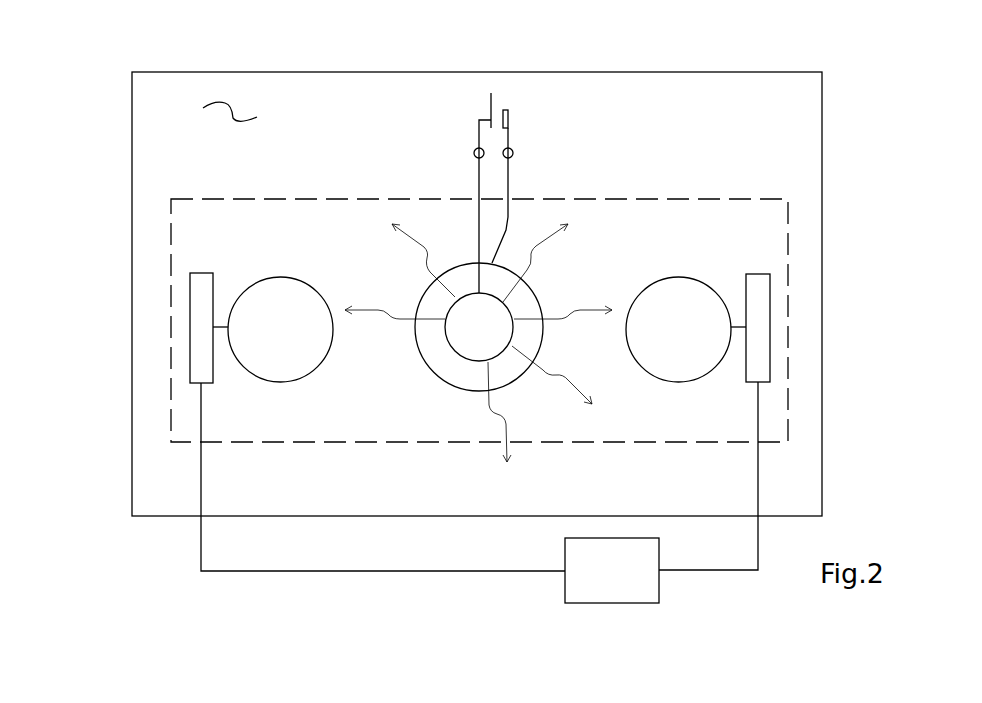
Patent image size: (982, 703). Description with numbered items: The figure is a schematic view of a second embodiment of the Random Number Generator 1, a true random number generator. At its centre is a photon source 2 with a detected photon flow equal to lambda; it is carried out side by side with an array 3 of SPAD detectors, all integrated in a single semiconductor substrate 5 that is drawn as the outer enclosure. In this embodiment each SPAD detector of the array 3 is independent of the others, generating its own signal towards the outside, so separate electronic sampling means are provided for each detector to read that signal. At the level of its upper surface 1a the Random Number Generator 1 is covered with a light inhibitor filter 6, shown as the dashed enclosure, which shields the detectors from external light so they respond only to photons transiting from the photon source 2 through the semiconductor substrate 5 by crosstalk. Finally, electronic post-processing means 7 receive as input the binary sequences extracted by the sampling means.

The Random Number Generator 1 is at (107, 57).
The upper surface 1a is at (232, 118).
The photon source 2 is at (435, 395).
The array 3 is at (305, 405).
The semiconductor substrate 5 is at (802, 100).
The light inhibitor filter 6 is at (771, 216).
The electronic post-processing means 7 is at (650, 589).